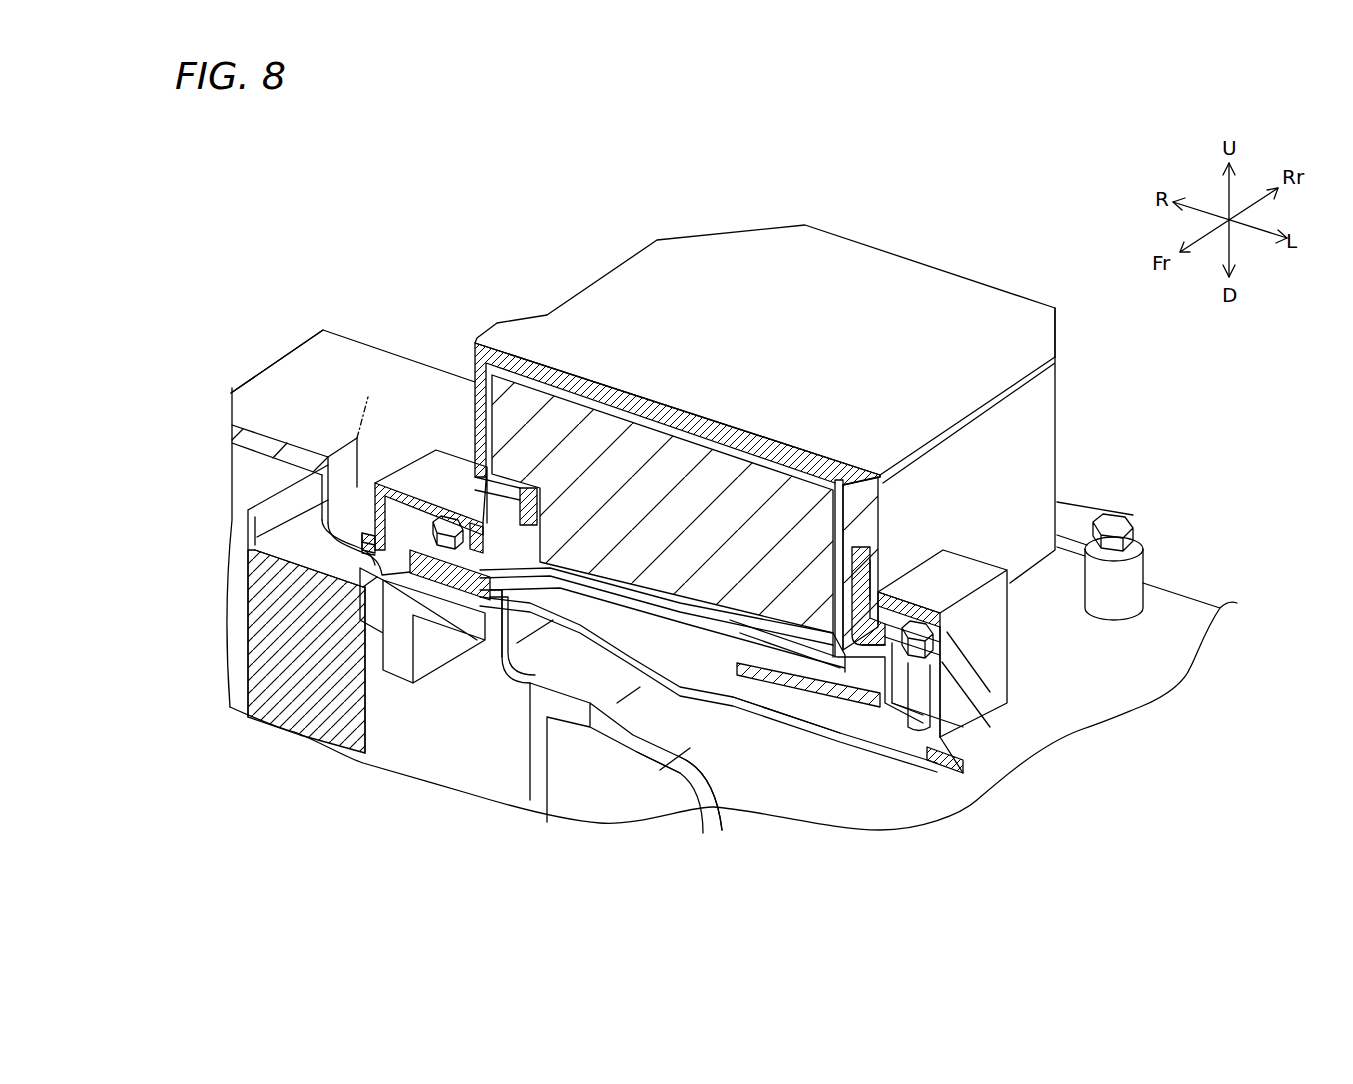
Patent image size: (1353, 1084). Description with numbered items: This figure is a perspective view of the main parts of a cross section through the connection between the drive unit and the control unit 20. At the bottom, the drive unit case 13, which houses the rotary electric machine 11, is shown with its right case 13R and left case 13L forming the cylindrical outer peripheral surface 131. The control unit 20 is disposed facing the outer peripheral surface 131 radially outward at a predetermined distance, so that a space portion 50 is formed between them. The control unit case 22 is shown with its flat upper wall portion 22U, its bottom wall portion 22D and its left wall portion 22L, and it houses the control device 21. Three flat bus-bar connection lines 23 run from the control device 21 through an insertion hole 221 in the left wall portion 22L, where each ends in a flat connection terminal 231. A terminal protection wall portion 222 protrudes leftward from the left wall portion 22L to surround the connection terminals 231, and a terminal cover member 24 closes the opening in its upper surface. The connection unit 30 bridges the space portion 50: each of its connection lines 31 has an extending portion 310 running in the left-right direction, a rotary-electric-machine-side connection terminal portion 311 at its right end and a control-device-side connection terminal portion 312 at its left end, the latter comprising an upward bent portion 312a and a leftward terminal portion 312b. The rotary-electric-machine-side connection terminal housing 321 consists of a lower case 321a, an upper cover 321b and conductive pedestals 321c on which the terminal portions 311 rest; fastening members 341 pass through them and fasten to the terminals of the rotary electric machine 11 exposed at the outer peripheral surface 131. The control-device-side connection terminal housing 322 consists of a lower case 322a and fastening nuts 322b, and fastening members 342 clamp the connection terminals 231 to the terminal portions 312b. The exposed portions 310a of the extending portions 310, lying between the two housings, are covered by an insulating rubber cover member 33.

The rotary electric machine 11 is at (290, 583).
The drive unit case 13 is at (277, 361).
The right case 13R is at (575, 710).
The left case 13L is at (690, 740).
The outer peripheral surface 131 is at (545, 680).
The control unit 20 is at (1040, 298).
The control device 21 is at (795, 505).
The control unit case 22 is at (809, 414).
The upper wall portion 22U is at (660, 275).
The bottom wall portion 22D is at (692, 640).
The left wall portion 22L is at (960, 500).
The insertion hole 221 is at (850, 575).
The terminal protection wall portion 222 is at (975, 657).
The connection line 23 is at (848, 603).
The connection terminal 231 is at (850, 628).
The terminal cover member 24 is at (970, 598).
The connection unit 30 is at (610, 585).
The connection line 31 is at (786, 715).
The extending portion 310 is at (637, 630).
The exposed portion 310a is at (667, 620).
The rotary-electric-machine-side connection terminal portion 311 is at (452, 590).
The control-device-side connection terminal portion 312 is at (846, 779).
The bent portion 312a is at (877, 700).
The terminal portion 312b is at (917, 653).
The rotary-electric-machine-side connection terminal housing 321 is at (253, 508).
The lower case 321a is at (355, 548).
The upper cover 321b is at (400, 468).
The conductive pedestal 321c is at (323, 512).
The control-device-side connection terminal housing 322 is at (981, 761).
The lower case 322a is at (993, 730).
The fastening nut 322b is at (949, 778).
The cover member 33 is at (498, 640).
The fastening member 341 is at (452, 515).
The fastening member 342 is at (970, 722).
The space portion 50 is at (712, 708).